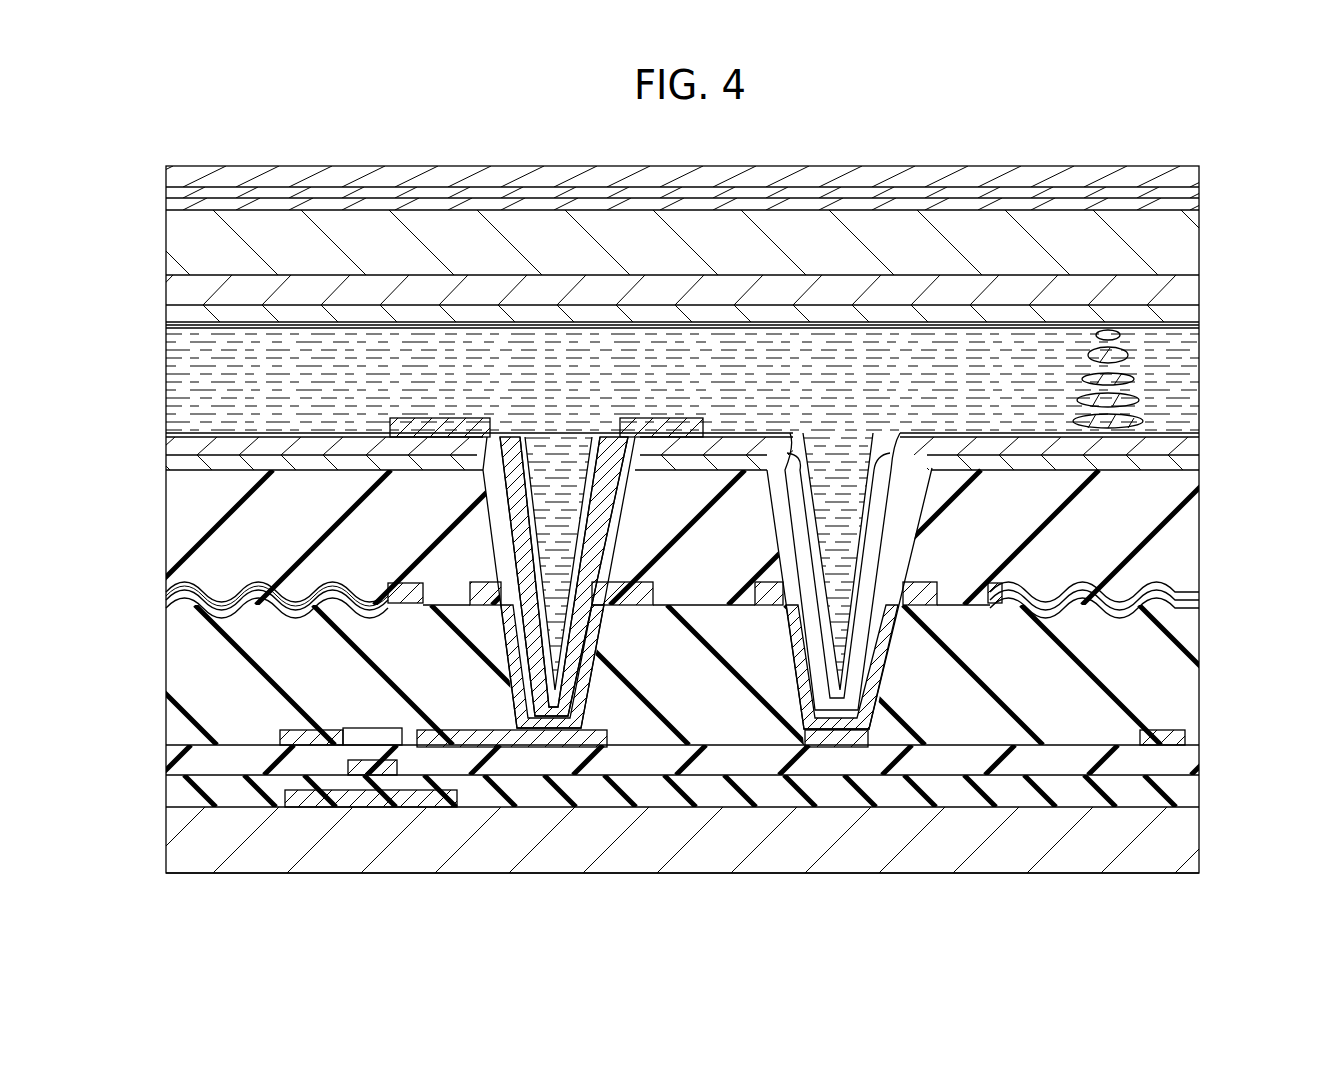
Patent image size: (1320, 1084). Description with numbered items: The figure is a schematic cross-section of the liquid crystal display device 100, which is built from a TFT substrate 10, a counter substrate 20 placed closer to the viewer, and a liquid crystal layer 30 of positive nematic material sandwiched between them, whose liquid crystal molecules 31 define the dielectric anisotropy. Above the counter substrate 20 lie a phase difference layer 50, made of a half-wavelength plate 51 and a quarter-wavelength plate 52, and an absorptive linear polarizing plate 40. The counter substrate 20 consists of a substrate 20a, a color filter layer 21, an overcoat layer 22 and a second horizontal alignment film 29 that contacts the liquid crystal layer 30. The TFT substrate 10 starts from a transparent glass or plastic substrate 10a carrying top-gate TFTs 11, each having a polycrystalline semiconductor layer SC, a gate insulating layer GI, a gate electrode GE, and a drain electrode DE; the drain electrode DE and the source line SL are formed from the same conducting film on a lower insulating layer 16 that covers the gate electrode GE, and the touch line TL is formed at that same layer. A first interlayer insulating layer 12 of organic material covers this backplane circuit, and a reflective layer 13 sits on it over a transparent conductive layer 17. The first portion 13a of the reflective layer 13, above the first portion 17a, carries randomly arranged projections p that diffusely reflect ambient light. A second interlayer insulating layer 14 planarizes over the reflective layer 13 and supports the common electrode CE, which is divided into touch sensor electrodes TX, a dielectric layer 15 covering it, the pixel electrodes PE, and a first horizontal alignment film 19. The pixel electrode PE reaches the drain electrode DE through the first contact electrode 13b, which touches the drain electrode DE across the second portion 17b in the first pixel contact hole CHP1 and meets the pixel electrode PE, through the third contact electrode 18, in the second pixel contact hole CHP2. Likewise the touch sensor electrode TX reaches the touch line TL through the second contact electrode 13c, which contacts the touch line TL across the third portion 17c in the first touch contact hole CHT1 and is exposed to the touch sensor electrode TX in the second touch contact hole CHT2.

The liquid crystal display device 100 is at (1228, 135).
The polarizing plate 40 is at (166, 176).
The phase difference layer 50 is at (715, 186).
The half-wavelength plate 51 is at (1196, 192).
The quarter-wavelength plate 52 is at (1196, 204).
The counter substrate 20 is at (685, 267).
The substrate 20a is at (1196, 240).
The color filter layer 21 is at (1196, 290).
The overcoat layer 22 is at (1196, 314).
The second horizontal alignment film 29 is at (1198, 326).
The liquid crystal layer 30 is at (151, 324).
The liquid crystal molecule 31 is at (1135, 374).
The first horizontal alignment film 19 is at (1192, 433).
The dielectric layer 15 is at (705, 428).
The common electrode CE is at (272, 458).
The touch sensor electrode TX is at (972, 458).
The pixel electrode PE is at (427, 426).
The third contact electrode 18 is at (600, 655).
The reflective layer 13 is at (682, 622).
The first portion 13a is at (262, 598).
The first contact electrode 13b is at (498, 636).
The second contact electrode 13c is at (776, 580).
The first pixel contact hole CHP1 is at (558, 500).
The second pixel contact hole CHP2 is at (553, 655).
The first touch contact hole CHT1 is at (843, 500).
The second touch contact hole CHT2 is at (839, 655).
The second interlayer insulating layer 14 is at (1192, 540).
The first interlayer insulating layer 12 is at (1192, 673).
The projection p is at (228, 566).
The transparent conductive layer 17 is at (533, 684).
The first portion 17a is at (232, 604).
The second portion 17b is at (494, 662).
The third portion 17c is at (784, 650).
The lower insulating layer 16 is at (1192, 760).
The gate insulating layer GI is at (400, 782).
The TFT substrate 10 is at (685, 655).
The substrate 10a is at (1192, 844).
The source line SL is at (293, 746).
The semiconductor layer SC is at (303, 800).
The gate electrode GE is at (367, 770).
The TFT 11 is at (382, 825).
The drain electrode DE is at (547, 748).
The touch line TL is at (838, 748).